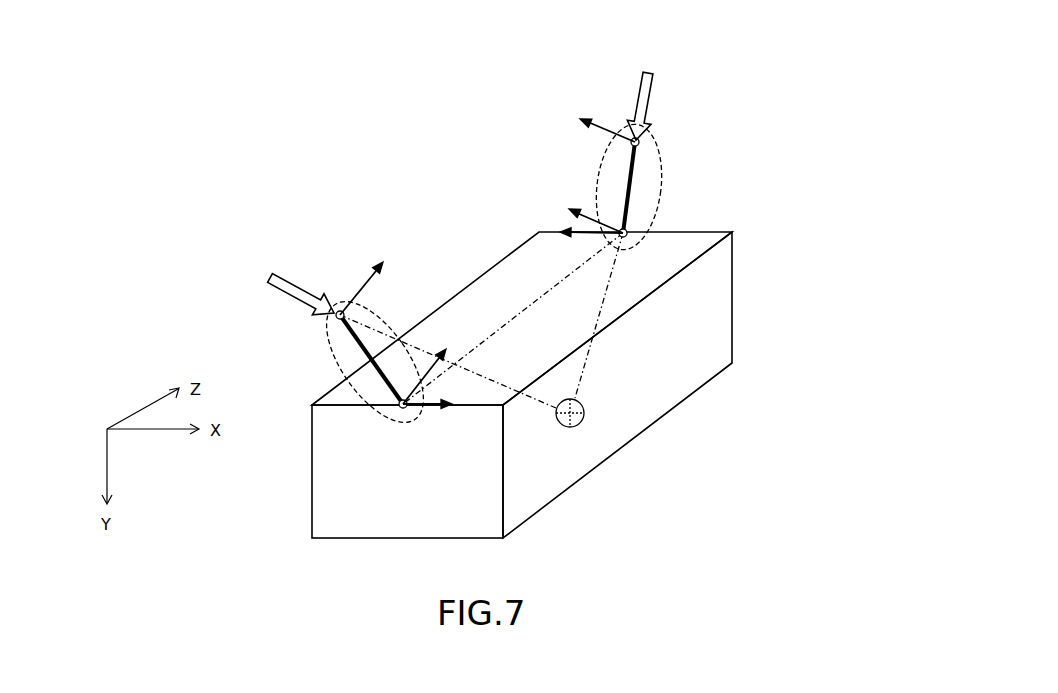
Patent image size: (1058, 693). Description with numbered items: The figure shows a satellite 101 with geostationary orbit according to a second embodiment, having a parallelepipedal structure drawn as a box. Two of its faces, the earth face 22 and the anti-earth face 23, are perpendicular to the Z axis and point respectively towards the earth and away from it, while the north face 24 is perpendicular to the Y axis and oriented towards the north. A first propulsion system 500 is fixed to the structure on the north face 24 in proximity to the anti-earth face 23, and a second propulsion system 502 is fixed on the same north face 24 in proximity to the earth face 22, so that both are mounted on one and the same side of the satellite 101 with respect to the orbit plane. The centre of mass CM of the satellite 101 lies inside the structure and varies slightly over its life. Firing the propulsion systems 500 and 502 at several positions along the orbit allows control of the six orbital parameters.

The earth face 22 is at (709, 232).
The anti-earth face 23 is at (480, 530).
The north face 24 is at (658, 274).
The satellite 101 is at (430, 170).
The first propulsion system 500 is at (380, 318).
The second propulsion system 502 is at (662, 155).
The centre of mass CM is at (585, 413).